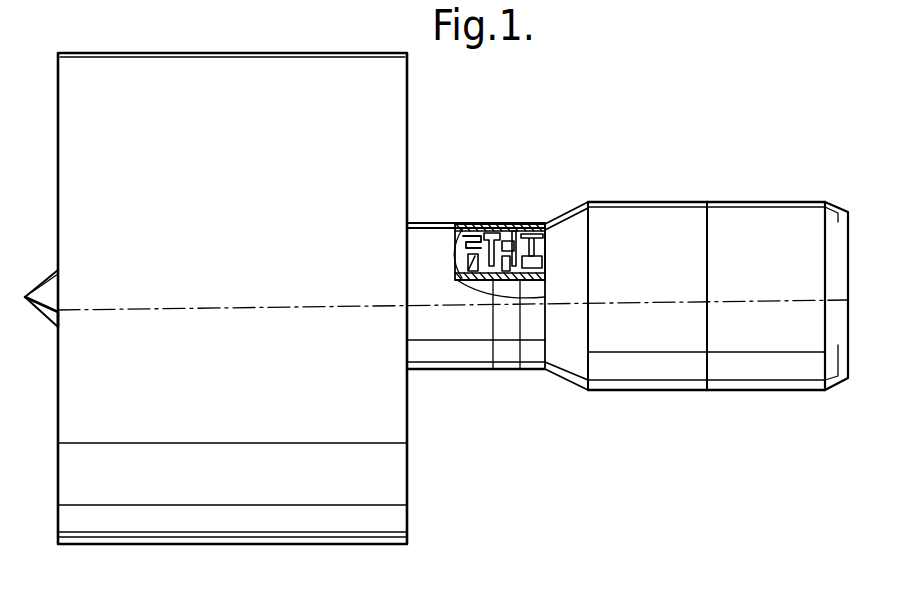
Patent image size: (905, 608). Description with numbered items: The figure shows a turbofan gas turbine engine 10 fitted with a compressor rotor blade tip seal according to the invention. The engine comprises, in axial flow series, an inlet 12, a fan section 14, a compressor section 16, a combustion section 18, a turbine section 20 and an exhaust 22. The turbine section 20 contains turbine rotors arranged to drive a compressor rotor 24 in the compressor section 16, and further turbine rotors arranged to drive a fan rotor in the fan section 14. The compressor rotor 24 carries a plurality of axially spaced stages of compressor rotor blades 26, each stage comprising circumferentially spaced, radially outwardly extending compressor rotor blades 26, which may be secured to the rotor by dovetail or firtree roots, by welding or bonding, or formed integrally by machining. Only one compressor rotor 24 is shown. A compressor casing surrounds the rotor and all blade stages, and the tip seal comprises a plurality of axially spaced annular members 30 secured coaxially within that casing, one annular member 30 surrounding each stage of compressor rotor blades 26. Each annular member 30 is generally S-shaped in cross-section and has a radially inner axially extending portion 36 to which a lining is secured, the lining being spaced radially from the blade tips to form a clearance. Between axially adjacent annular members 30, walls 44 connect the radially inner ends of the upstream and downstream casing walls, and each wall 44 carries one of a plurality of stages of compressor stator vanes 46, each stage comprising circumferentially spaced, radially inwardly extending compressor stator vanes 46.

The turbofan gas turbine engine 10 is at (541, 186).
The inlet 12 is at (58, 223).
The fan section 14 is at (247, 512).
The compressor section 16 is at (461, 355).
The combustion section 18 is at (657, 368).
The turbine section 20 is at (770, 364).
The exhaust 22 is at (836, 360).
The compressor rotor 24 is at (493, 290).
The compressor rotor blades 26 is at (460, 282).
The annular members 30 is at (509, 232).
The radially inner axially extending portion 36 is at (470, 238).
The walls 44 is at (545, 225).
The compressor stator vanes 46 is at (547, 258).